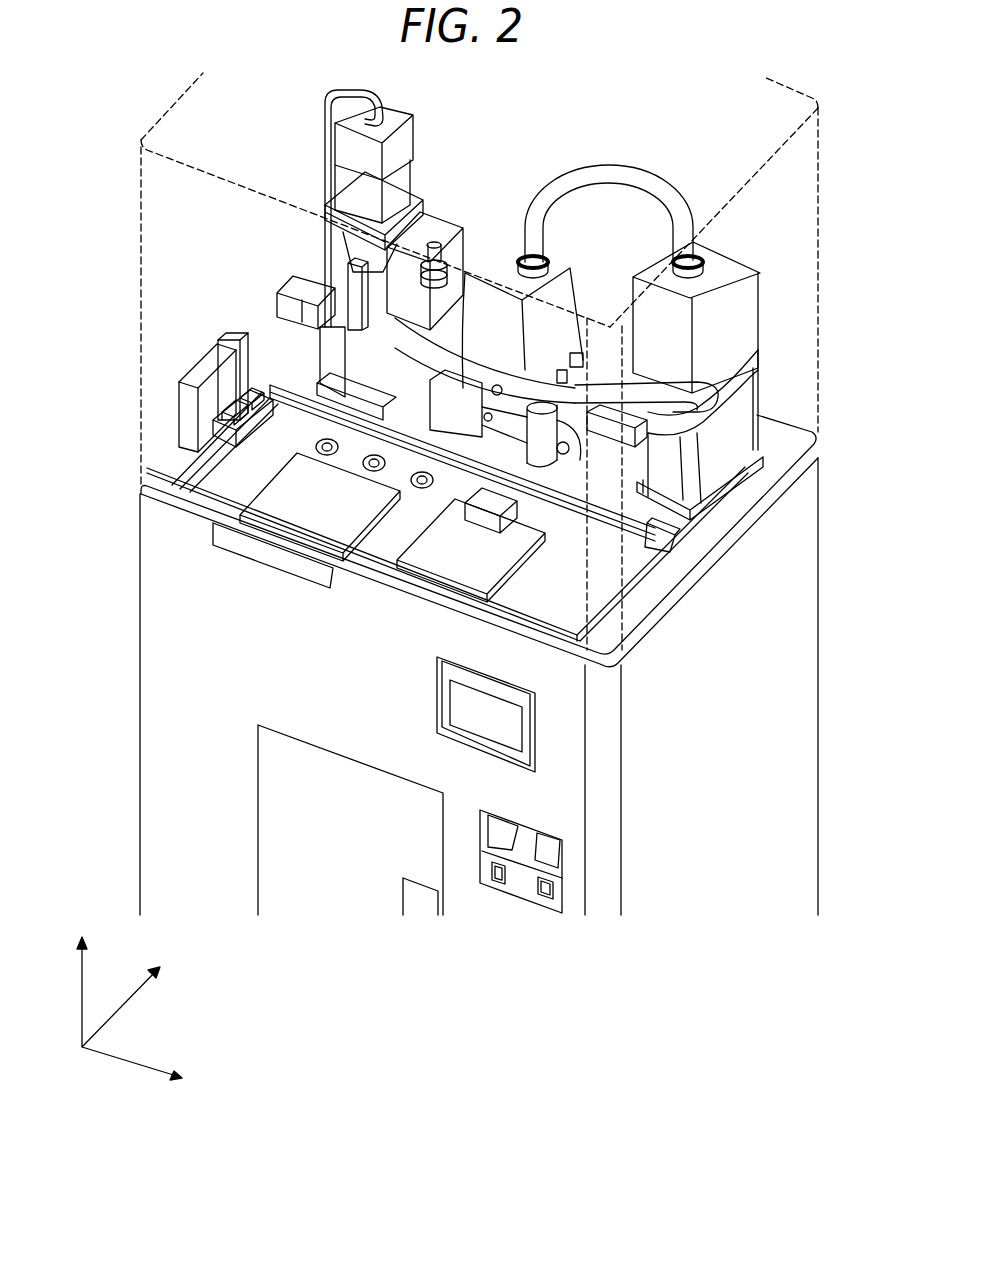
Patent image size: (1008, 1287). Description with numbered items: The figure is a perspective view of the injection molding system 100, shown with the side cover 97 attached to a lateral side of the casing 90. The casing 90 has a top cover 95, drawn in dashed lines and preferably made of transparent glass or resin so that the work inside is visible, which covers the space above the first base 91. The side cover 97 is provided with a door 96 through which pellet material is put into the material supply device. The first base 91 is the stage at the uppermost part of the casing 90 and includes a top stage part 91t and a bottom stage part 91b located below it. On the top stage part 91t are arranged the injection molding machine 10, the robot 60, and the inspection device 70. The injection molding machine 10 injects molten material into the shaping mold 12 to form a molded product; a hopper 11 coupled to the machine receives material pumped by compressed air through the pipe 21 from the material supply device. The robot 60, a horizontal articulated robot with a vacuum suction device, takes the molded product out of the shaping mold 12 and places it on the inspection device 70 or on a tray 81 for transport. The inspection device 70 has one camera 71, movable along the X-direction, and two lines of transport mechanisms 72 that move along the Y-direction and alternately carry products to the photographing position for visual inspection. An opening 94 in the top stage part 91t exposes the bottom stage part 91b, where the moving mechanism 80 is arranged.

The injection molding system 100 is at (151, 120).
The top cover 95 is at (140, 217).
The casing 90 is at (140, 560).
The side cover 97 is at (177, 665).
The door 96 is at (340, 840).
The first base 91 is at (767, 568).
The top stage part 91t is at (670, 562).
The bottom stage part 91b is at (573, 595).
The opening 94 is at (658, 522).
The moving mechanism 80 is at (297, 443).
The tray 81 is at (303, 517).
The inspection device 70 is at (187, 410).
The camera 71 is at (227, 362).
The transport mechanism 72 is at (290, 390).
The pipe 21 is at (325, 182).
The hopper 11 is at (403, 186).
The injection molding machine 10 is at (443, 217).
The shaping mold 12 is at (466, 275).
The robot 60 is at (742, 290).